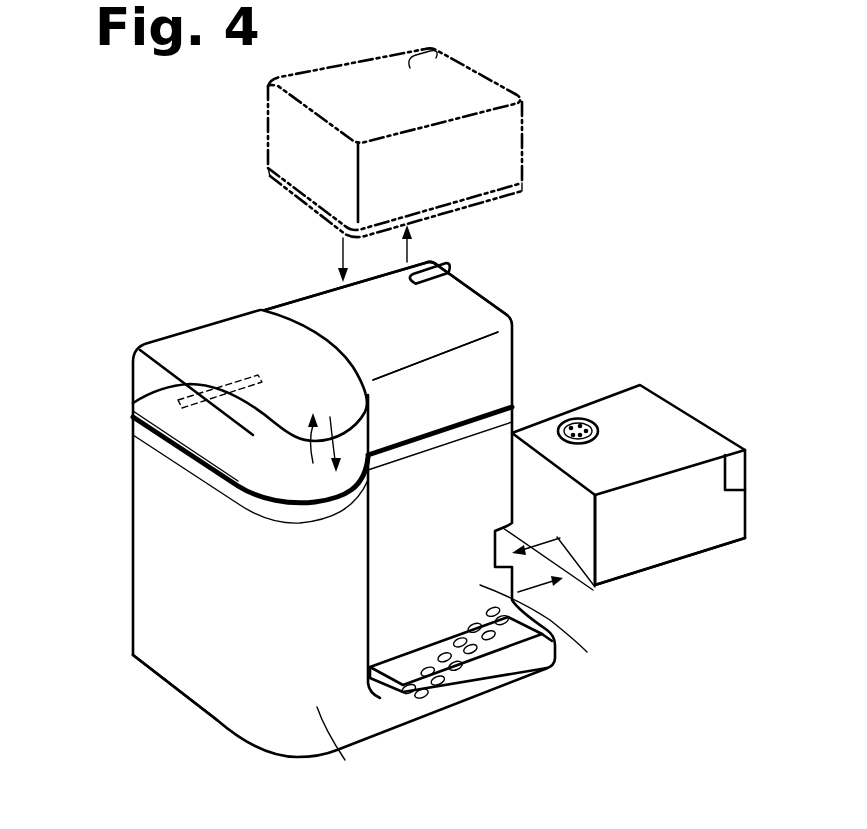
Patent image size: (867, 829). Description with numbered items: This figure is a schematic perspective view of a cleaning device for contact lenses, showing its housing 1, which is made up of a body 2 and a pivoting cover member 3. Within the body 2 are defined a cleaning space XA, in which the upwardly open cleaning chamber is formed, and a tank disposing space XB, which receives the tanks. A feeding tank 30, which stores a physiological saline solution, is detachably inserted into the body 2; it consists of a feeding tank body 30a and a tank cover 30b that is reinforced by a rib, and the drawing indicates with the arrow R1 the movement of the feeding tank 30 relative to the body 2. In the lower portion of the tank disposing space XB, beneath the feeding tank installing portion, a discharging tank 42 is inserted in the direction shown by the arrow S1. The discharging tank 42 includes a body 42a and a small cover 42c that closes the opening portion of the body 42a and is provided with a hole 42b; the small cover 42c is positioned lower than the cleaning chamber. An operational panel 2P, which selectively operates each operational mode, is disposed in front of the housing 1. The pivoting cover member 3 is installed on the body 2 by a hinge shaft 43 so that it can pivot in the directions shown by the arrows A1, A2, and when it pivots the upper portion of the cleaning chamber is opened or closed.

The housing 1 is at (220, 717).
The body 2 is at (147, 600).
The operational panel 2P is at (448, 660).
The pivoting cover member 3 is at (207, 345).
The feeding tank 30 is at (477, 288).
The feeding tank body 30a is at (497, 153).
The tank cover 30b is at (487, 92).
The discharging tank 42 is at (677, 415).
The body (of discharging tank) 42a is at (667, 552).
The hole 42b is at (580, 420).
The small cover 42c is at (583, 420).
The hinge shaft 43 is at (128, 403).
The pivoting direction A1 is at (313, 453).
The pivoting direction A2 is at (330, 458).
The cartridge insertion direction R1 is at (343, 254).
The insertion direction S1 is at (593, 590).
The cleaning space XA is at (345, 756).
The tank disposing space XB is at (556, 636).